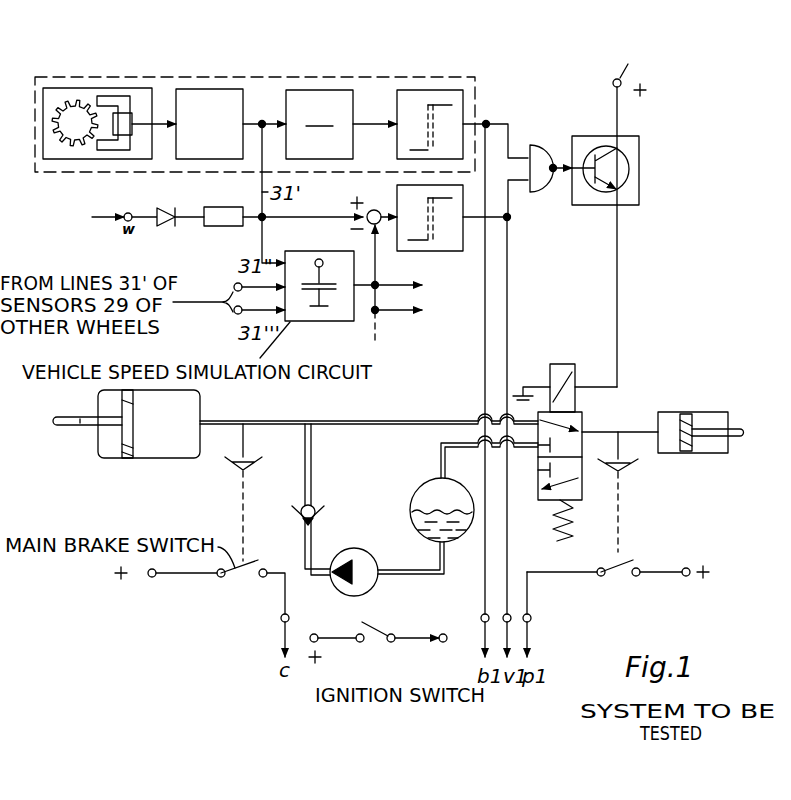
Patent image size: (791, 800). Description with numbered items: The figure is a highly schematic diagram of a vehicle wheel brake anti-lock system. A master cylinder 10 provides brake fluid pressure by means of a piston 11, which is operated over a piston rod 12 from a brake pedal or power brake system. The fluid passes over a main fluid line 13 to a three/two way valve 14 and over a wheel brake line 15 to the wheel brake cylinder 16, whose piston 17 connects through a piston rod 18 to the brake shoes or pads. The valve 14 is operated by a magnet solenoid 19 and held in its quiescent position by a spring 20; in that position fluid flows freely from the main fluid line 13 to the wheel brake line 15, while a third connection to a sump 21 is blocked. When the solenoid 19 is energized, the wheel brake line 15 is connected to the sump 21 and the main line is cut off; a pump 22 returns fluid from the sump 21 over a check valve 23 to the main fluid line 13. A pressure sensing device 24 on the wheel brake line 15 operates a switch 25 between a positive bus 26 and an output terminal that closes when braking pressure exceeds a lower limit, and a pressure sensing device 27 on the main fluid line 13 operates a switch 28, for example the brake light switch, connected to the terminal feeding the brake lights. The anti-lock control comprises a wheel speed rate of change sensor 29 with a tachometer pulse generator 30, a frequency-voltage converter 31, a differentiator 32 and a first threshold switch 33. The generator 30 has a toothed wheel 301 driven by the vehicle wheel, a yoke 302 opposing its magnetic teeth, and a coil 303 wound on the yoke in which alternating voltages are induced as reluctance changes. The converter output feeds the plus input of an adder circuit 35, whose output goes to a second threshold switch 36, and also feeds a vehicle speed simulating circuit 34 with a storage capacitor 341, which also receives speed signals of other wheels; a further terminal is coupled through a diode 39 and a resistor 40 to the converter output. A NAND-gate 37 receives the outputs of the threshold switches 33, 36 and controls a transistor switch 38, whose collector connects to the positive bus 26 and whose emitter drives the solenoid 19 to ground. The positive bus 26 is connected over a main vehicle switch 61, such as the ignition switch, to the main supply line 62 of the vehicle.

The master cylinder 10 is at (178, 454).
The piston 11 is at (128, 458).
The piston rod 12 is at (81, 422).
The main fluid line 13 is at (382, 420).
The valve 14 is at (582, 418).
The wheel brake line 15 is at (638, 430).
The wheel brake cylinder 16 is at (704, 412).
The piston 17 is at (684, 446).
The piston rod 18 is at (713, 440).
The magnet solenoid 19 is at (562, 365).
The spring 20 is at (575, 525).
The sump 21 is at (423, 496).
The pump 22 is at (362, 585).
The check valve 23 is at (313, 505).
The pressure sensing device 24 is at (623, 473).
The switch 25 is at (618, 582).
The positive bus 26 is at (618, 77).
The pressure sensing device 27 is at (248, 473).
The switch 28 is at (243, 582).
The wheel speed rate of change sensor 29 is at (265, 73).
The tachometer pulse generator 30 is at (141, 92).
The toothed wheel 301 is at (68, 147).
The yoke 302 is at (110, 148).
The coil 303 is at (128, 125).
The frequency-voltage converter 31 is at (212, 95).
The differentiator 32 is at (321, 90).
The first threshold switch 33 is at (434, 90).
The vehicle speed simulating circuit 34 is at (305, 313).
The storage capacitor 341 is at (330, 291).
The adder circuit 35 is at (377, 209).
The second threshold switch 36 is at (443, 245).
The NAND-gate 37 is at (539, 157).
The transistor switch 38 is at (633, 188).
The diode 39 is at (148, 232).
The resistor 40 is at (221, 220).
The main vehicle switch 61 is at (376, 630).
The main supply line 62 is at (315, 632).